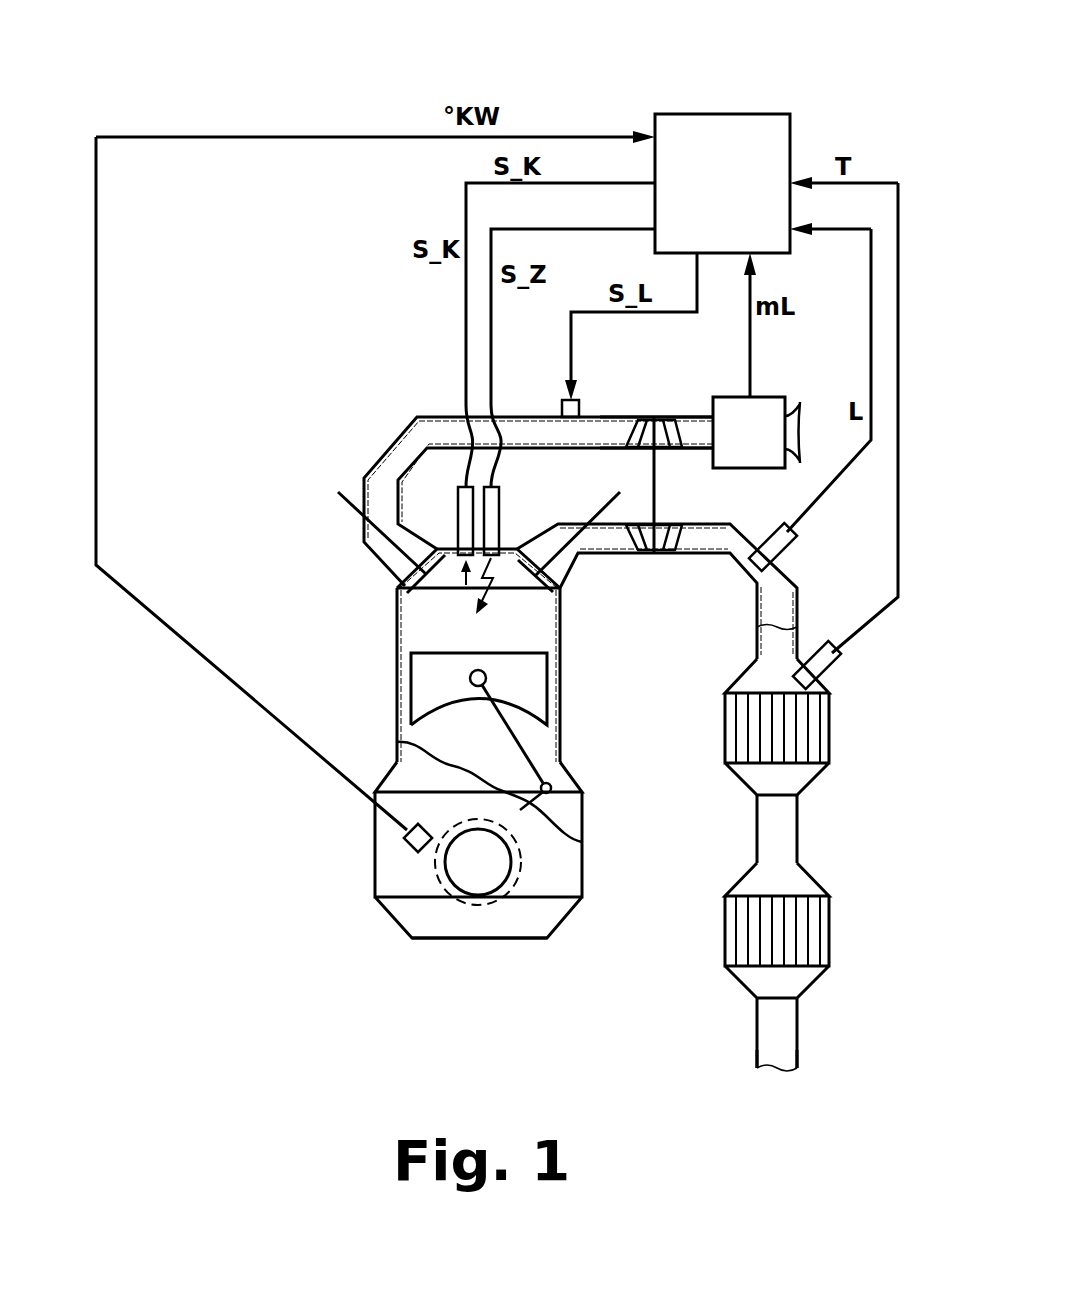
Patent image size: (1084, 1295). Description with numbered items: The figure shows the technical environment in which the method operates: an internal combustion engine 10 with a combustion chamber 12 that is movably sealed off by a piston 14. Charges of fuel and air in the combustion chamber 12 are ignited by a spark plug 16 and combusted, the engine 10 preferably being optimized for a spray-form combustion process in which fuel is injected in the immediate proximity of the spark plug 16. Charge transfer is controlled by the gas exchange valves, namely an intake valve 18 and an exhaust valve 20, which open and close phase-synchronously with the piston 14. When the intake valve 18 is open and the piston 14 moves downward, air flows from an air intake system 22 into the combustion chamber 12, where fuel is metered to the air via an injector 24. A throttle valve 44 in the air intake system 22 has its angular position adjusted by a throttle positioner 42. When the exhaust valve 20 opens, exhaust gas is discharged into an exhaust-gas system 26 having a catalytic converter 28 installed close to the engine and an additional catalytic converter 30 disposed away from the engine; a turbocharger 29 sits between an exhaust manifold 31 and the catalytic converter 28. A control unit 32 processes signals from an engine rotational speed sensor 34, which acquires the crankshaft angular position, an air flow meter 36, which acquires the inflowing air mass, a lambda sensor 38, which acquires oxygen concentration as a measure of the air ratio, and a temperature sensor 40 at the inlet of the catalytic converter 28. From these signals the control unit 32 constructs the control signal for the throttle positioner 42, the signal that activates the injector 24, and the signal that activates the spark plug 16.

The internal combustion engine 10 is at (300, 990).
The combustion chamber 12 is at (417, 628).
The piston 14 is at (427, 688).
The spark plug 16 is at (497, 528).
The intake valve 18 is at (347, 503).
The exhaust valve 20 is at (592, 502).
The air intake system 22 is at (338, 425).
The injector 24 is at (460, 535).
The exhaust-gas system 26 is at (774, 1118).
The catalytic converter 28 is at (830, 717).
The turbocharger 29 is at (690, 487).
The additional catalytic converter 30 is at (830, 925).
The exhaust manifold 31 is at (623, 560).
The control unit 32 is at (722, 120).
The engine rotational speed sensor 34 is at (405, 850).
The air flow meter 36 is at (766, 402).
The lambda sensor 38 is at (787, 548).
The exhaust-gas temperature sensor 40 is at (840, 657).
The throttle positioner 42 is at (582, 412).
The throttle valve 44 is at (574, 428).